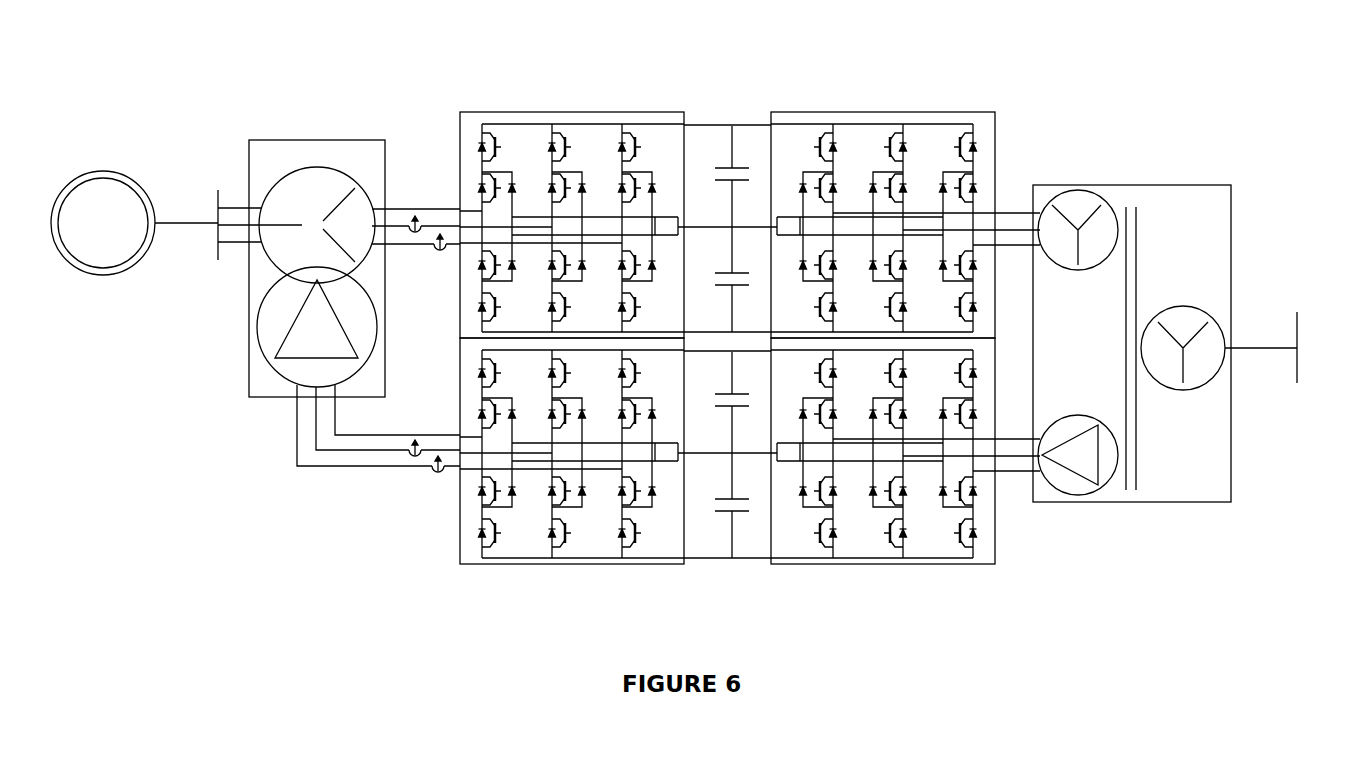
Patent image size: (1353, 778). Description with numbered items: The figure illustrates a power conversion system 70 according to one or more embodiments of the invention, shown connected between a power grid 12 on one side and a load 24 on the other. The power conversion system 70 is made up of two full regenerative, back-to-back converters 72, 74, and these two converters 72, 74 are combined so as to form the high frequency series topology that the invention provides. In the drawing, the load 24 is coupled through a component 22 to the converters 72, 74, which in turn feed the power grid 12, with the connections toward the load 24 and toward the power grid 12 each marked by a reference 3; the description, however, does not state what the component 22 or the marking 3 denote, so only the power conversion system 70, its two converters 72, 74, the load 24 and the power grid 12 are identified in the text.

The load 24 is at (103, 170).
The three-phase connection 3 is at (1268, 333).
The transformer 22 is at (308, 135).
The power conversion system 70 is at (680, 88).
The full regenerative (back-to-back) converter 72 is at (445, 133).
The full regenerative (back-to-back) converter 74 is at (450, 513).
The power grid 12 is at (1303, 297).